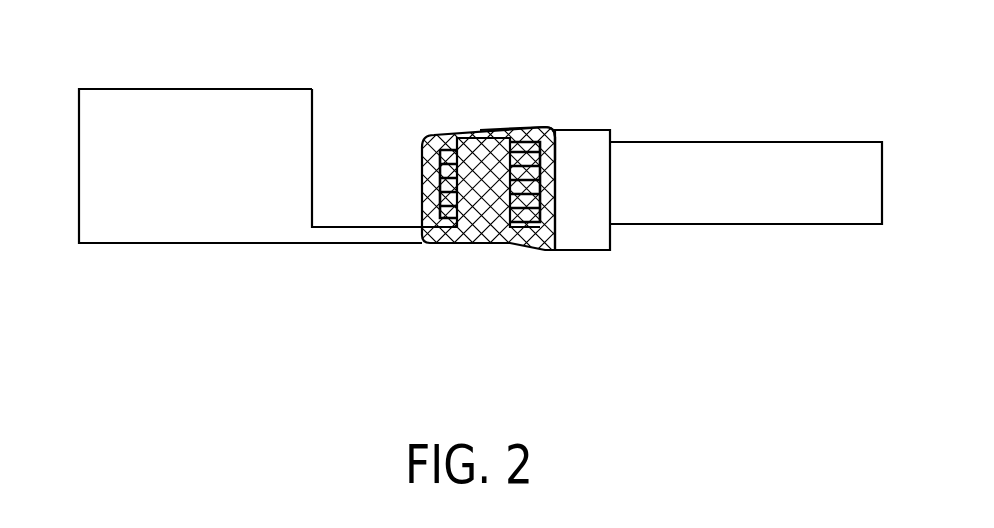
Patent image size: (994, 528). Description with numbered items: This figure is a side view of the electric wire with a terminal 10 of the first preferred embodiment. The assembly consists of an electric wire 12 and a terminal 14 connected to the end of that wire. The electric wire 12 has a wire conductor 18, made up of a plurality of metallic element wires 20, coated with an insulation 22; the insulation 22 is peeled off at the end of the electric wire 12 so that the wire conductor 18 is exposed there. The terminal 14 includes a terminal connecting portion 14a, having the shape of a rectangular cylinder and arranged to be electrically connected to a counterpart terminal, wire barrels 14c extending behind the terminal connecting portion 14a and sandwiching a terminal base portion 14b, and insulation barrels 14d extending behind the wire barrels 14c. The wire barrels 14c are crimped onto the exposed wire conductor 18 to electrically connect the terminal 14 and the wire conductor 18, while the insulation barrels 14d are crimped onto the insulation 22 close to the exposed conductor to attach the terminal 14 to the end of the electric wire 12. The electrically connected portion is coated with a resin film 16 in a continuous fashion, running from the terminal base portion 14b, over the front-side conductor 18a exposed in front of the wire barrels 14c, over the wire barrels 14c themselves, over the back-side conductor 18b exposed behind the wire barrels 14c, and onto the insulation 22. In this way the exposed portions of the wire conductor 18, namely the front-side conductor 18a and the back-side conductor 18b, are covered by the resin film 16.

The electric wire with a terminal 10 is at (868, 331).
The electric wire 12 is at (752, 142).
The terminal 14 is at (344, 168).
The terminal connecting portion 14a is at (195, 245).
The terminal base portion 14b is at (362, 245).
The wire barrels 14c is at (486, 234).
The insulation barrels 14d is at (598, 236).
The resin film 16 is at (432, 135).
The wire conductor 18 is at (479, 247).
The front-side conductor 18a is at (452, 230).
The back-side conductor 18b is at (518, 230).
The metallic element wires 20 is at (443, 135).
The insulation 22 is at (547, 130).